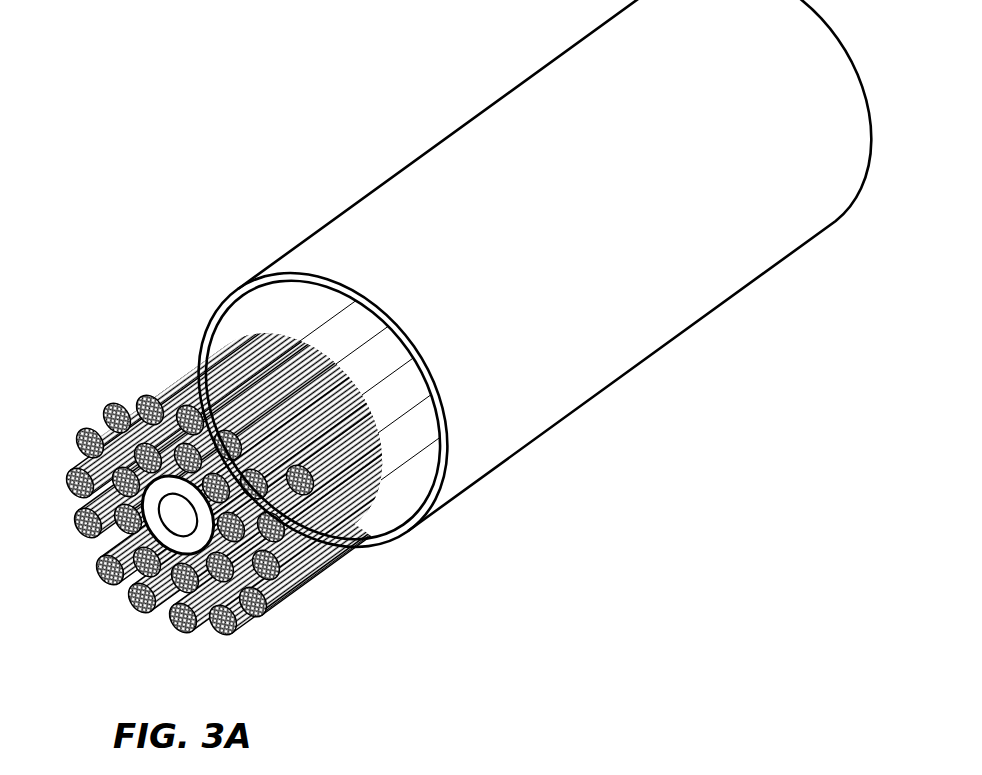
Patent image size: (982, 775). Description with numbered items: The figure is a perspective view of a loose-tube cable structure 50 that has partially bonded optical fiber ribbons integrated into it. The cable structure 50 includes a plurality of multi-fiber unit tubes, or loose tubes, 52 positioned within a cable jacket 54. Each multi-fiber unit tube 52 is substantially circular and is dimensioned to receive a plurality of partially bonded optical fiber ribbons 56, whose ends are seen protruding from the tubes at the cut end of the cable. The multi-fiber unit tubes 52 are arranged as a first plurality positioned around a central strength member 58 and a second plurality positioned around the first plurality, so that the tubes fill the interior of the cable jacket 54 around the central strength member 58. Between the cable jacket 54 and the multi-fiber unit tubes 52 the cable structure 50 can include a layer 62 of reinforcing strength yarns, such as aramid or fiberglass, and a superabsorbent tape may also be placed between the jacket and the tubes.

The loose-tube cable structure 50 is at (183, 119).
The multi-fiber unit tube 52 is at (216, 326).
The cable jacket 54 is at (247, 290).
The partially bonded optical fiber ribbon 56 is at (78, 538).
The central strength member 58 is at (178, 526).
The layer of reinforcing strength yarns 62 is at (298, 292).